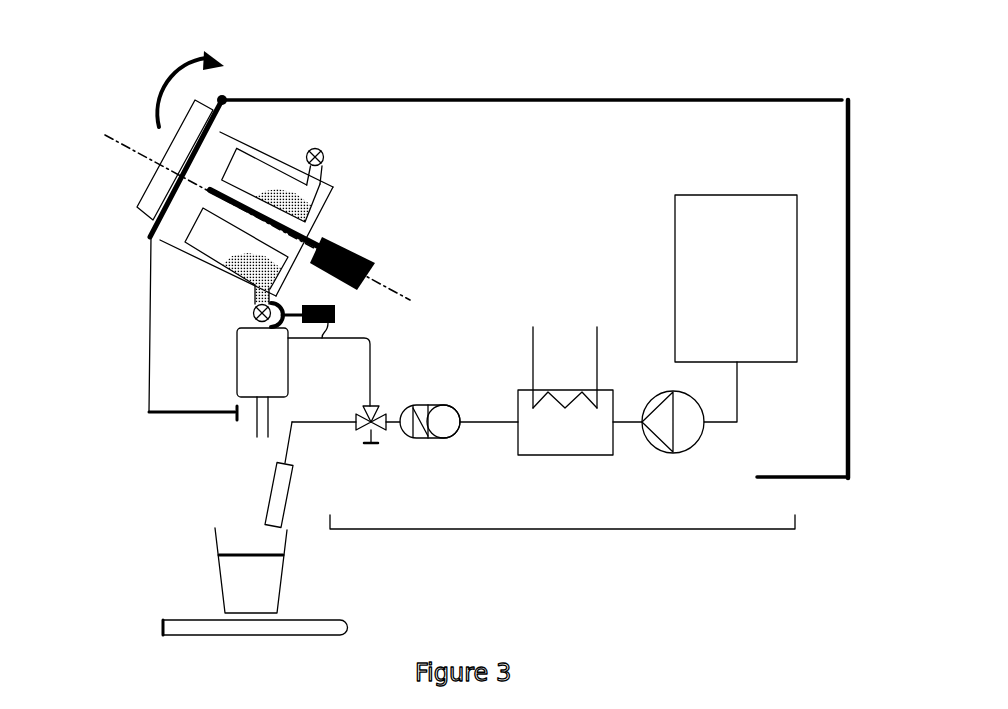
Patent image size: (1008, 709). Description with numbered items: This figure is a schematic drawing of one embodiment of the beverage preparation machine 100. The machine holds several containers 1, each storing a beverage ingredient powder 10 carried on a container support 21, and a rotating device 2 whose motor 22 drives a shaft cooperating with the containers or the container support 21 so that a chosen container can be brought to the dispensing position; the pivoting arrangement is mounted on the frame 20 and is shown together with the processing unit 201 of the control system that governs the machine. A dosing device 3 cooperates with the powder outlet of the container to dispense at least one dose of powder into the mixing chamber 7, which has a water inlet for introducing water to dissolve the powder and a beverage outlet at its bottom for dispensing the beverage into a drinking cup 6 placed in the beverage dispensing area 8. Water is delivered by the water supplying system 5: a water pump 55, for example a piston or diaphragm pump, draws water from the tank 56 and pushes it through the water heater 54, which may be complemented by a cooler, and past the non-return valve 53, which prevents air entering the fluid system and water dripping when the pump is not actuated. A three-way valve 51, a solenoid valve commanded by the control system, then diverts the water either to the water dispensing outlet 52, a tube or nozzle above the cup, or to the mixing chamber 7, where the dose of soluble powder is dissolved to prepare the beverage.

The beverage preparation machine 100 is at (882, 154).
The frame 20 is at (848, 240).
The processing unit 201 is at (150, 223).
The motor 22 is at (140, 177).
The container 1 is at (213, 213).
The container support 21 is at (318, 207).
The beverage ingredient powder 10 is at (247, 270).
The rotating device 2 is at (352, 240).
The dosing device 3 is at (250, 318).
The mixing chamber 7 is at (237, 363).
The water supplying system 5 is at (563, 529).
The three-way valve 51 is at (380, 412).
The water dispensing outlet 52 is at (273, 493).
The non-return valve 53 is at (428, 438).
The water heater 54 is at (565, 455).
The water pump 55 is at (657, 397).
The tank 56 is at (675, 282).
The drinking cup 6 is at (218, 573).
The beverage dispensing area 8 is at (348, 628).